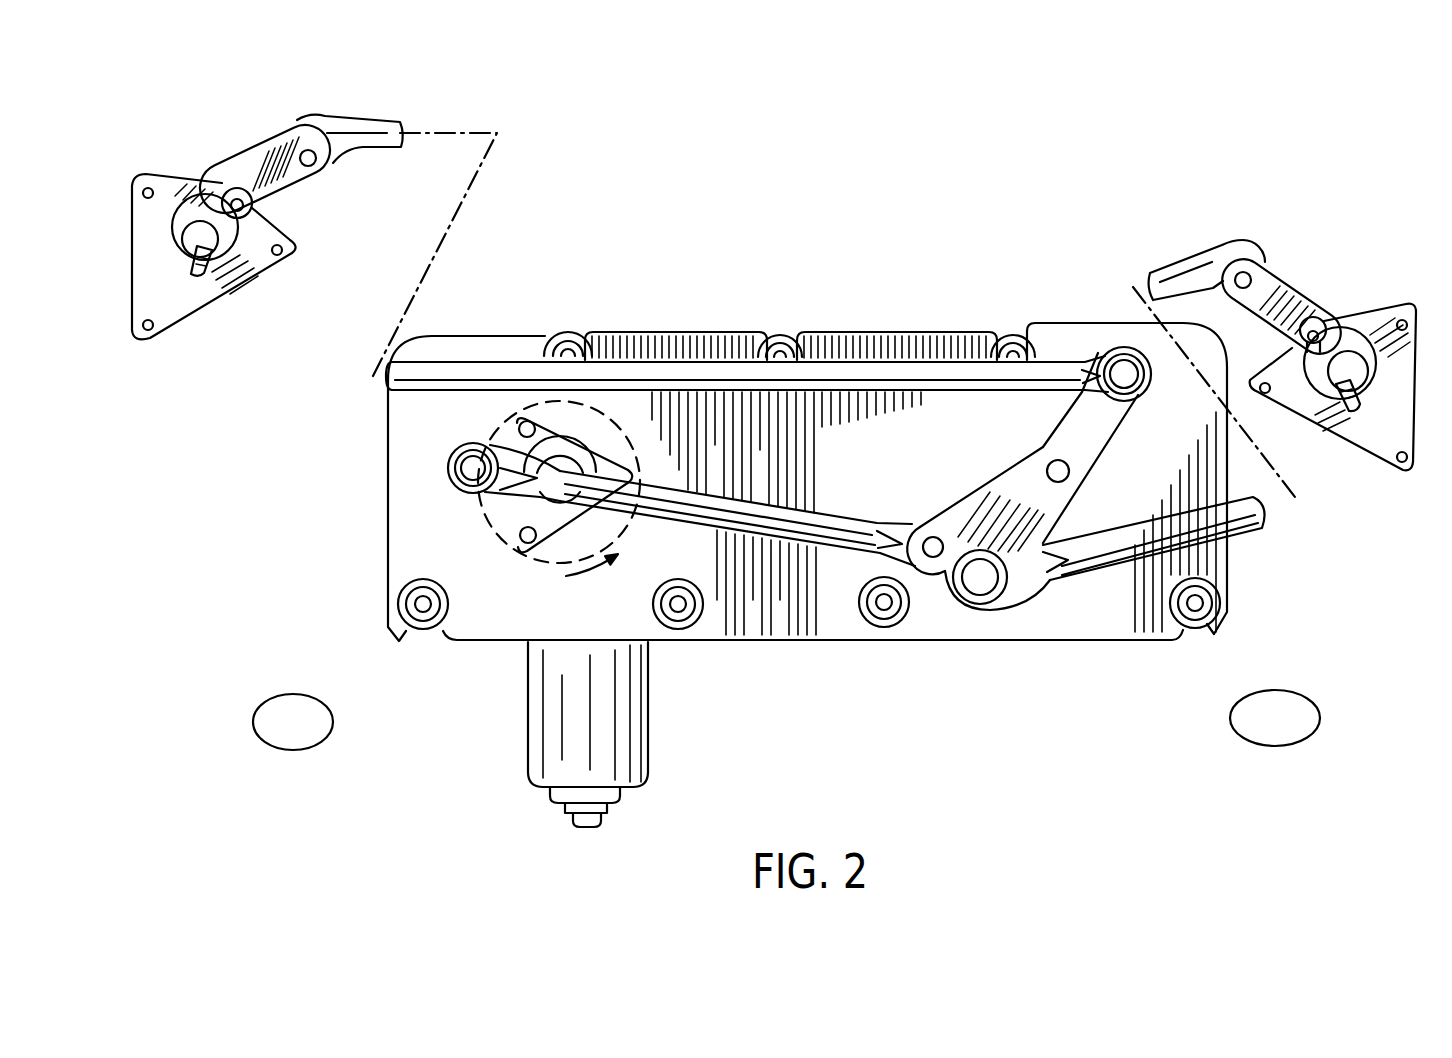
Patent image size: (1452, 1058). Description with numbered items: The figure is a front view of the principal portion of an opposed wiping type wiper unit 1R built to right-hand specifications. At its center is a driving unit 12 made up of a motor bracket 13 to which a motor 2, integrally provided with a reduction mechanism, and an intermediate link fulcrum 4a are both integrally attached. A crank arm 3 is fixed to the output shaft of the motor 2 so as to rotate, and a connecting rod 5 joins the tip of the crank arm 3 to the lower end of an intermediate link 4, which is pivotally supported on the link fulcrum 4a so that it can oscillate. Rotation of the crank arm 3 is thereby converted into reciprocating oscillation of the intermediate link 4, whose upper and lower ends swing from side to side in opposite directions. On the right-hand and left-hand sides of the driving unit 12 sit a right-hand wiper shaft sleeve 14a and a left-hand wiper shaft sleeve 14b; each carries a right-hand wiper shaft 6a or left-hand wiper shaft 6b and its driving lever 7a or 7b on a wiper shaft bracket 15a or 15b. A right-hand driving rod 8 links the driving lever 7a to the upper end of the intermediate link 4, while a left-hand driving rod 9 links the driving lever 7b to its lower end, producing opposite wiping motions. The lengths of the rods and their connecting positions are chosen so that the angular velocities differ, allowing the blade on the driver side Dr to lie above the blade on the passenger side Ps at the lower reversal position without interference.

The wiper unit 1R is at (825, 483).
The motor 2 is at (650, 712).
The crank arm 3 is at (512, 448).
The intermediate link 4 is at (1034, 522).
The intermediate link fulcrum 4a is at (1052, 471).
The connecting rod 5 is at (818, 556).
The right-hand wiper shaft 6a is at (196, 274).
The left-hand wiper shaft 6b is at (1356, 410).
The driving lever 7a is at (272, 136).
The driving lever 7b is at (1287, 262).
The right-hand driving rod 8 is at (654, 358).
The left-hand driving rod 9 is at (1148, 557).
The driving unit 12 is at (864, 276).
The motor bracket 13 is at (727, 332).
The right-hand wiper shaft sleeve 14a is at (266, 230).
The left-hand wiper shaft sleeve 14b is at (1300, 356).
The wiper shaft bracket 15a is at (242, 274).
The wiper shaft bracket 15b is at (1350, 435).
The driver side Dr is at (293, 722).
The passenger side Ps is at (1275, 718).